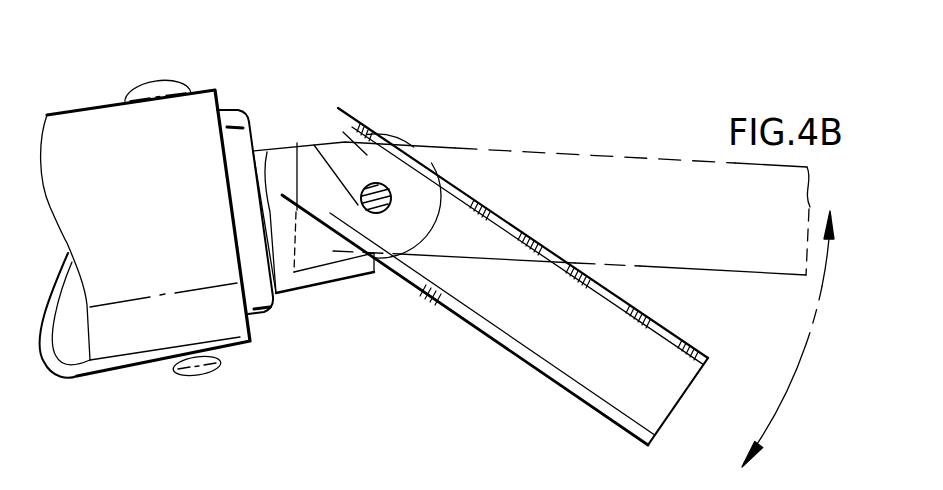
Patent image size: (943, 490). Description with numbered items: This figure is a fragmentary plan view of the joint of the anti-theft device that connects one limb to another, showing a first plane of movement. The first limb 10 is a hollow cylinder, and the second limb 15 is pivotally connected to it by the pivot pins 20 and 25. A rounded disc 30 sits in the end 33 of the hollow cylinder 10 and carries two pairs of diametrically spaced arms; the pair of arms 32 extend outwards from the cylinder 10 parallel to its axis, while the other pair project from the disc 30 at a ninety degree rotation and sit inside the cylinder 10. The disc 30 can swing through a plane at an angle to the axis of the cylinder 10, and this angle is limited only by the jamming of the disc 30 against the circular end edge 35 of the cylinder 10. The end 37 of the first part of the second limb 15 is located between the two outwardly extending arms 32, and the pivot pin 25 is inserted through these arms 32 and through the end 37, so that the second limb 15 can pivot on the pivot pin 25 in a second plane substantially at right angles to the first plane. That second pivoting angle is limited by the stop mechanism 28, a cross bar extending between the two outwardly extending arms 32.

The first limb 10 is at (125, 370).
The second limb 15 is at (528, 367).
The pivot pin 20 is at (152, 80).
The pivot pin 25 is at (374, 213).
The stop mechanism 28 is at (343, 282).
The rounded disc 30 is at (257, 133).
The arms 32 is at (400, 130).
The end 33 is at (233, 360).
The circular end edge 35 is at (229, 98).
The end 37 is at (350, 103).